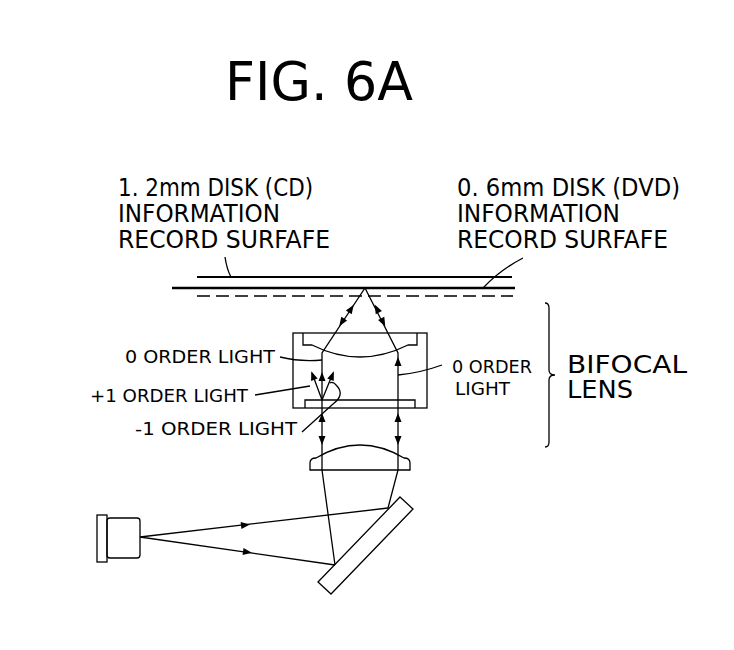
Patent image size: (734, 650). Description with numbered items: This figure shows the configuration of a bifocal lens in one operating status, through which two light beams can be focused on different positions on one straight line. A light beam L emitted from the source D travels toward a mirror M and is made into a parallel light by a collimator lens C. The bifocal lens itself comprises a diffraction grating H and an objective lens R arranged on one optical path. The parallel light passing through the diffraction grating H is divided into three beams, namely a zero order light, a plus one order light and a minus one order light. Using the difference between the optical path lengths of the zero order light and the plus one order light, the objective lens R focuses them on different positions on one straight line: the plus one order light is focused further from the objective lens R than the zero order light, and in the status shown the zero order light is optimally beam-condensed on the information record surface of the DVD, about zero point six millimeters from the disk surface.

The objective lens R is at (403, 335).
The diffraction grating H is at (408, 410).
The collimator lens C is at (412, 468).
The semiconductor laser (light source) D is at (104, 515).
The light beam L is at (174, 542).
The mirror M is at (385, 545).